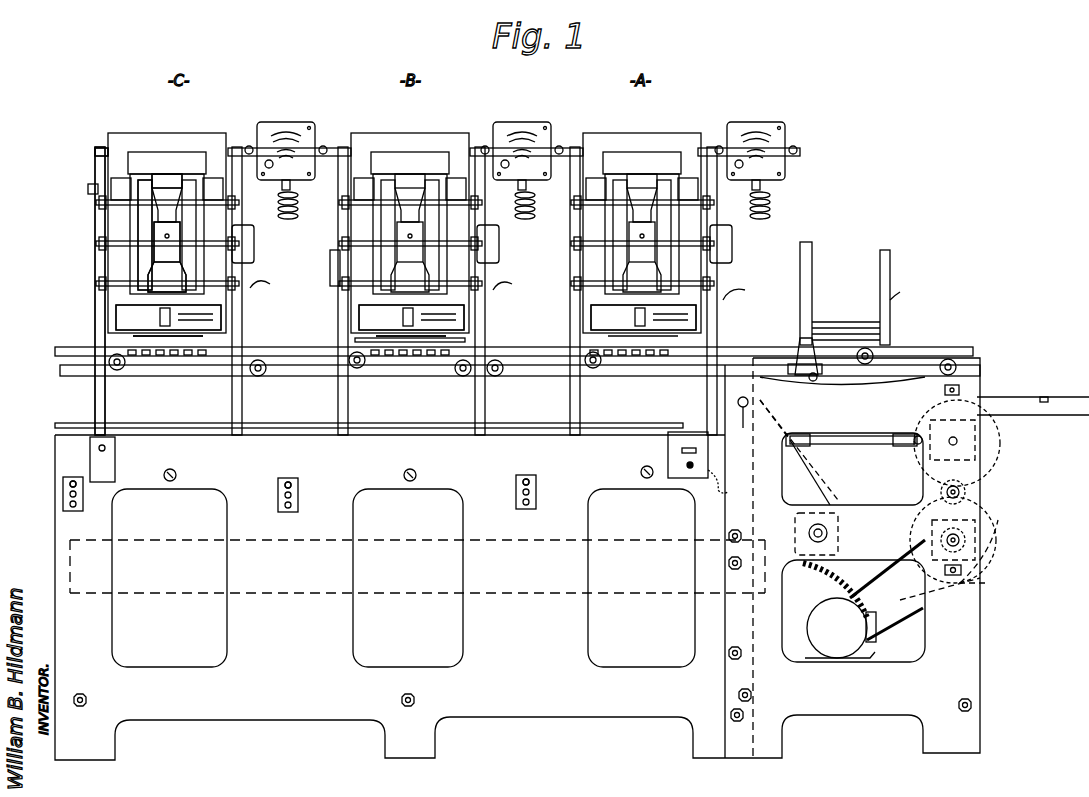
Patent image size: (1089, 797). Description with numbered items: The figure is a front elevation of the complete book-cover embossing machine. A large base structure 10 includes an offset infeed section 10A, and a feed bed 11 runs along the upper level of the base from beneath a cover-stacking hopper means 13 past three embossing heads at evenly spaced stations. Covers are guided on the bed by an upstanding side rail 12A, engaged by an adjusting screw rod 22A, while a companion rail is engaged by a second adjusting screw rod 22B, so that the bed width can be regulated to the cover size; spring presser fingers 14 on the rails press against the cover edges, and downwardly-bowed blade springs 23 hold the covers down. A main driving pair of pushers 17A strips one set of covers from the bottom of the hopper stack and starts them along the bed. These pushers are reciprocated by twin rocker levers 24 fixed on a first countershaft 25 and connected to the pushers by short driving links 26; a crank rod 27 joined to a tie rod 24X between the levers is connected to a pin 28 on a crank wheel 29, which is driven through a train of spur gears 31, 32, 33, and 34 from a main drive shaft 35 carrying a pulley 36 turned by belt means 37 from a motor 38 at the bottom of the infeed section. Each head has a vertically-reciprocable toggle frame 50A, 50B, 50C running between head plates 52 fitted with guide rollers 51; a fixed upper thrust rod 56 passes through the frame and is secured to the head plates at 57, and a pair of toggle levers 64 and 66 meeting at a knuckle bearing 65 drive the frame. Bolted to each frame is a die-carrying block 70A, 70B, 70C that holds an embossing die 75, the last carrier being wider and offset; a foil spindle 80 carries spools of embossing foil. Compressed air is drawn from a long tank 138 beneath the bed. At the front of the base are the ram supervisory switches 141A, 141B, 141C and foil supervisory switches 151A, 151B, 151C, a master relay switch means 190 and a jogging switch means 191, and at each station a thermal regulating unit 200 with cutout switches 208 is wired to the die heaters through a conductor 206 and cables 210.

The base structure 10 is at (536, 640).
The offset infeed section 10A is at (868, 690).
The feed bed 11 is at (72, 345).
The side rail 12A is at (55, 351).
The cover-stacking hopper means 13 is at (848, 275).
The spring presser fingers 14 is at (310, 360).
The main driving pair of pushers 17A is at (815, 378).
The adjusting screw rod 22A is at (128, 368).
The adjusting screw rod 22B is at (497, 377).
The blade springs 23 is at (240, 333).
The twin rocker levers 24 is at (806, 488).
The tie rod 24X is at (796, 446).
The first countershaft 25 is at (828, 532).
The driving link 26 is at (812, 382).
The crank rod 27 is at (872, 440).
The pin 28 is at (910, 448).
The crank wheel 29 is at (990, 455).
The spur gear 31 is at (1000, 443).
The spur gear 32 is at (940, 490).
The spur gear 33 is at (966, 492).
The spur gear 34 is at (965, 562).
The main drive shaft 35 is at (968, 540).
The pulley 36 is at (980, 520).
The belt means 37 is at (905, 612).
The motor 38 is at (825, 612).
The toggle frame 50A is at (636, 128).
The toggle frame 50B is at (402, 128).
The toggle frame 50C is at (173, 126).
The guide rollers 51 is at (96, 147).
The head plates 52 is at (94, 168).
The upper thrust rod 56 is at (170, 173).
The thrust rod securing point 57 is at (88, 186).
The toggle lever 64 is at (148, 256).
The knuckle bearing 65 is at (148, 232).
The toggle lever 66 is at (138, 200).
The die-carrying block 70A is at (600, 320).
The die-carrying block 70B is at (365, 319).
The die-carrying block 70C is at (130, 320).
The embossing die 75 is at (390, 340).
The foil spindle 80 is at (330, 262).
The tank 138 is at (418, 540).
The supervisory switch 141A is at (518, 484).
The supervisory switch 141B is at (278, 486).
The supervisory switch 141C is at (66, 482).
The foil supervisory switch 151A is at (536, 488).
The foil supervisory switch 151B is at (298, 492).
The foil supervisory switch 151C is at (63, 497).
The master relay switch means 190 is at (738, 403).
The switch means 191 is at (108, 448).
The thermal regulating unit 200 is at (300, 122).
The conductor 206 is at (262, 300).
The cutout switches 208 is at (254, 255).
The cables 210 is at (282, 218).